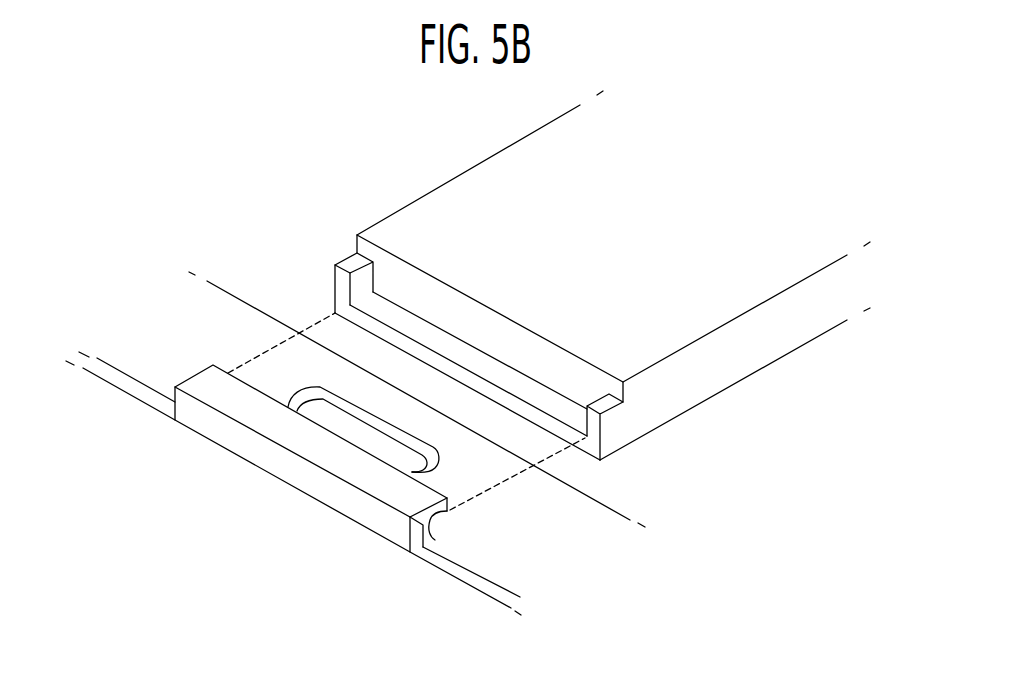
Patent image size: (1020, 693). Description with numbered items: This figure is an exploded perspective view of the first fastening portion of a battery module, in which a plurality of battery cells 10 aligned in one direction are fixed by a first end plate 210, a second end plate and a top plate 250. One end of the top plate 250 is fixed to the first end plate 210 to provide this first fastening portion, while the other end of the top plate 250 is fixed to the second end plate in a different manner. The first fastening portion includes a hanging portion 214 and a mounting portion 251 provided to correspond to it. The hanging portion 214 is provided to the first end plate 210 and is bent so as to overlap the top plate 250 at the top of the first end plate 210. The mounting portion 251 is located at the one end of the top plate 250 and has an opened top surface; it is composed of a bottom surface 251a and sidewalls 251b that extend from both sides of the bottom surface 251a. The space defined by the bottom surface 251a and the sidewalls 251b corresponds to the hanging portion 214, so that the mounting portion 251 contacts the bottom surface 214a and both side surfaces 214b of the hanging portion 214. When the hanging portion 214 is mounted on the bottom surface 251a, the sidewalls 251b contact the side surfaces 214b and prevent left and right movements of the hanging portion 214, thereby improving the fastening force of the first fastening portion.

The battery cell 10 is at (508, 565).
The first end plate 210 is at (393, 496).
The hanging portion 214 is at (295, 440).
The bottom surface 214a is at (443, 515).
The side surfaces 214b is at (423, 548).
The top plate 250 is at (521, 275).
The mounting portion 251 is at (397, 322).
The bottom surface 251a is at (370, 305).
The sidewalls 251b is at (342, 290).